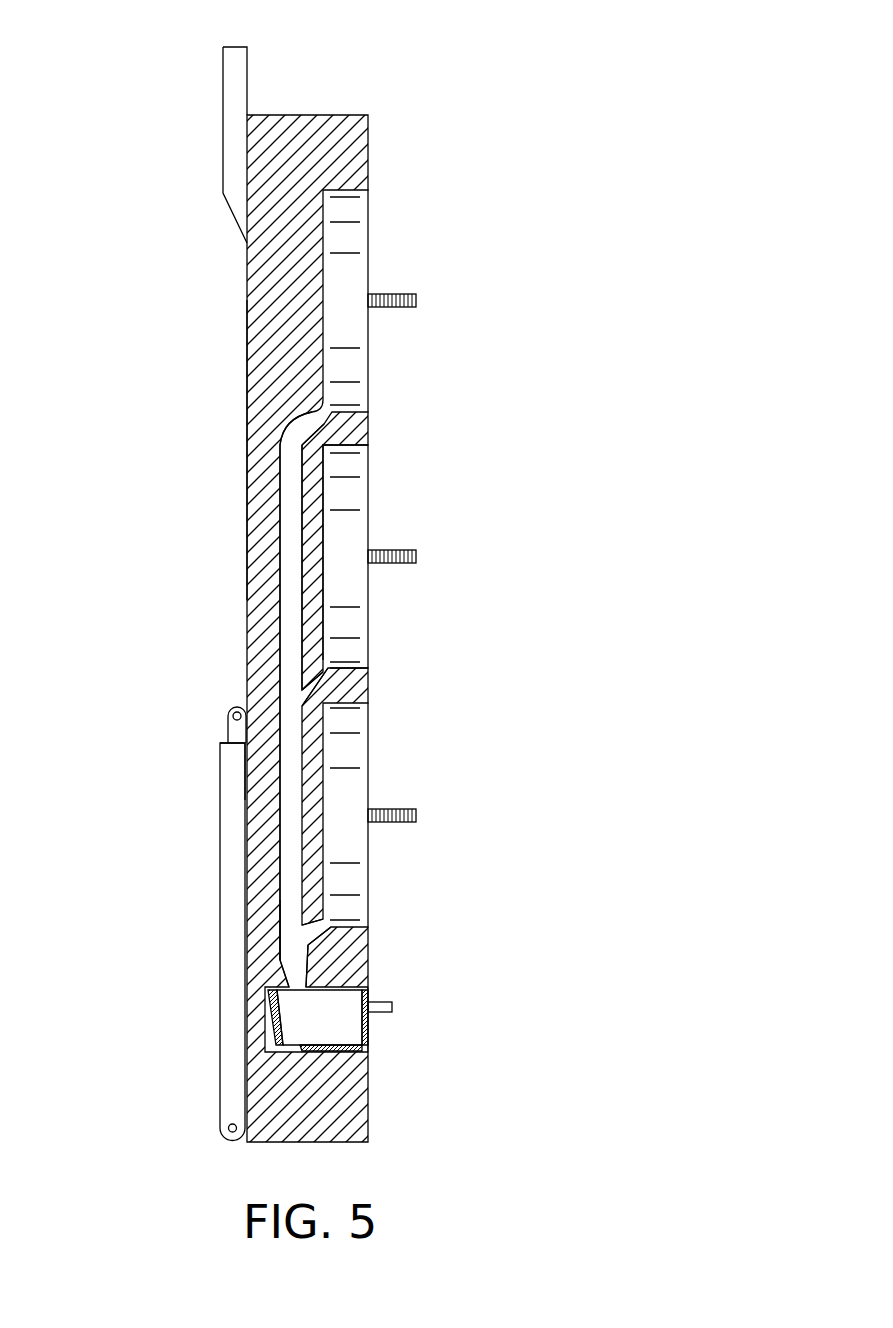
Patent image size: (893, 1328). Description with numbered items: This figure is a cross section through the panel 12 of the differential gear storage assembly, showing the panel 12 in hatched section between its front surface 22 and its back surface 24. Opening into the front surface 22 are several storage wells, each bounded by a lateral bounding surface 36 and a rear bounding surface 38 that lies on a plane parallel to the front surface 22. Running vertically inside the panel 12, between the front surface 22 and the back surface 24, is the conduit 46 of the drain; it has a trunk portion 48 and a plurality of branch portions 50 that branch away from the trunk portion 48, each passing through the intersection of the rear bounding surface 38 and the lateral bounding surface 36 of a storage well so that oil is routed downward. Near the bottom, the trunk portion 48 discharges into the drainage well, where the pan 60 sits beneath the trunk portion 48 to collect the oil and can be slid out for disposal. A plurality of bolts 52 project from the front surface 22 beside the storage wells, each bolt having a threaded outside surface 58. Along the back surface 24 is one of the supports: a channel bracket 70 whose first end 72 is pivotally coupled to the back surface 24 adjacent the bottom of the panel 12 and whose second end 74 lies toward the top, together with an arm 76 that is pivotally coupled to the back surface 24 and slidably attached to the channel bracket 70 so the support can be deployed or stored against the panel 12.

The panel 12 is at (434, 116).
The front surface 22 is at (368, 1095).
The back surface 24 is at (247, 448).
The lateral bounding surface 36 is at (337, 490).
The rear bounding surface 38 is at (324, 620).
The conduit 46 is at (276, 530).
The trunk portion 48 is at (291, 918).
The branch portions 50 is at (316, 417).
The bolts 52 is at (411, 294).
The outside surface 58 is at (395, 821).
The pan 60 is at (327, 1052).
The channel bracket 70 is at (220, 1042).
The first end 72 is at (232, 1140).
The second end 74 is at (223, 743).
The arm 76 is at (234, 709).